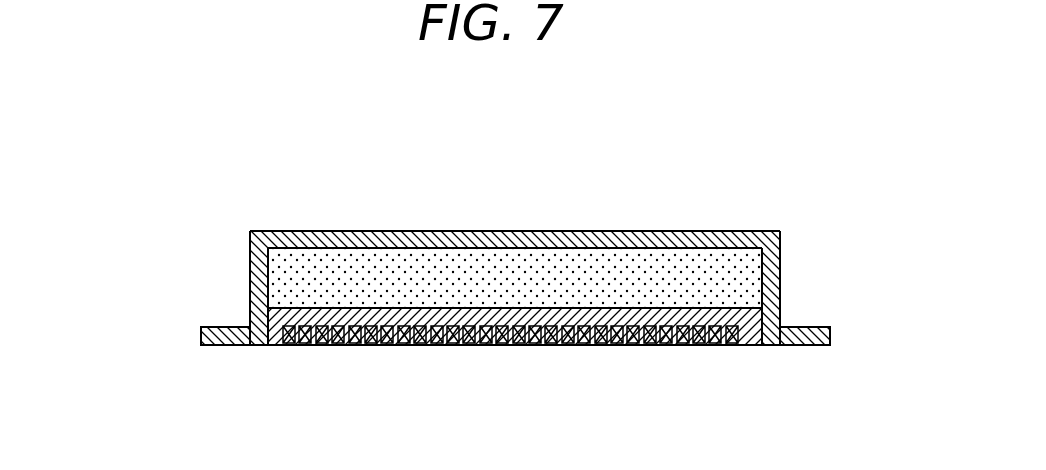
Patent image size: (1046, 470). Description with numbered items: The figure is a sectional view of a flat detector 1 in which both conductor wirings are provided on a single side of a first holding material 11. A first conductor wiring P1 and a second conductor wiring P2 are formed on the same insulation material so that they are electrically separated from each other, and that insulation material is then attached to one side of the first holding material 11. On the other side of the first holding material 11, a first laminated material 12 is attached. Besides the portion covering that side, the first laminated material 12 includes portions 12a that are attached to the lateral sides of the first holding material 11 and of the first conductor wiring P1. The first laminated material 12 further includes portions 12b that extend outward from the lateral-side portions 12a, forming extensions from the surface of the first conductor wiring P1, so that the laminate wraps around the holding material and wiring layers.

The flat detector 1 is at (240, 195).
The first holding material 11 is at (732, 278).
The first laminated material 12 is at (673, 241).
The portions of the first laminated material attached to lateral sides 12a is at (262, 285).
The extending portions of the first laminated material 12b is at (200, 340).
The first conductor wiring P1 is at (763, 317).
The second conductor wiring P2 is at (726, 334).